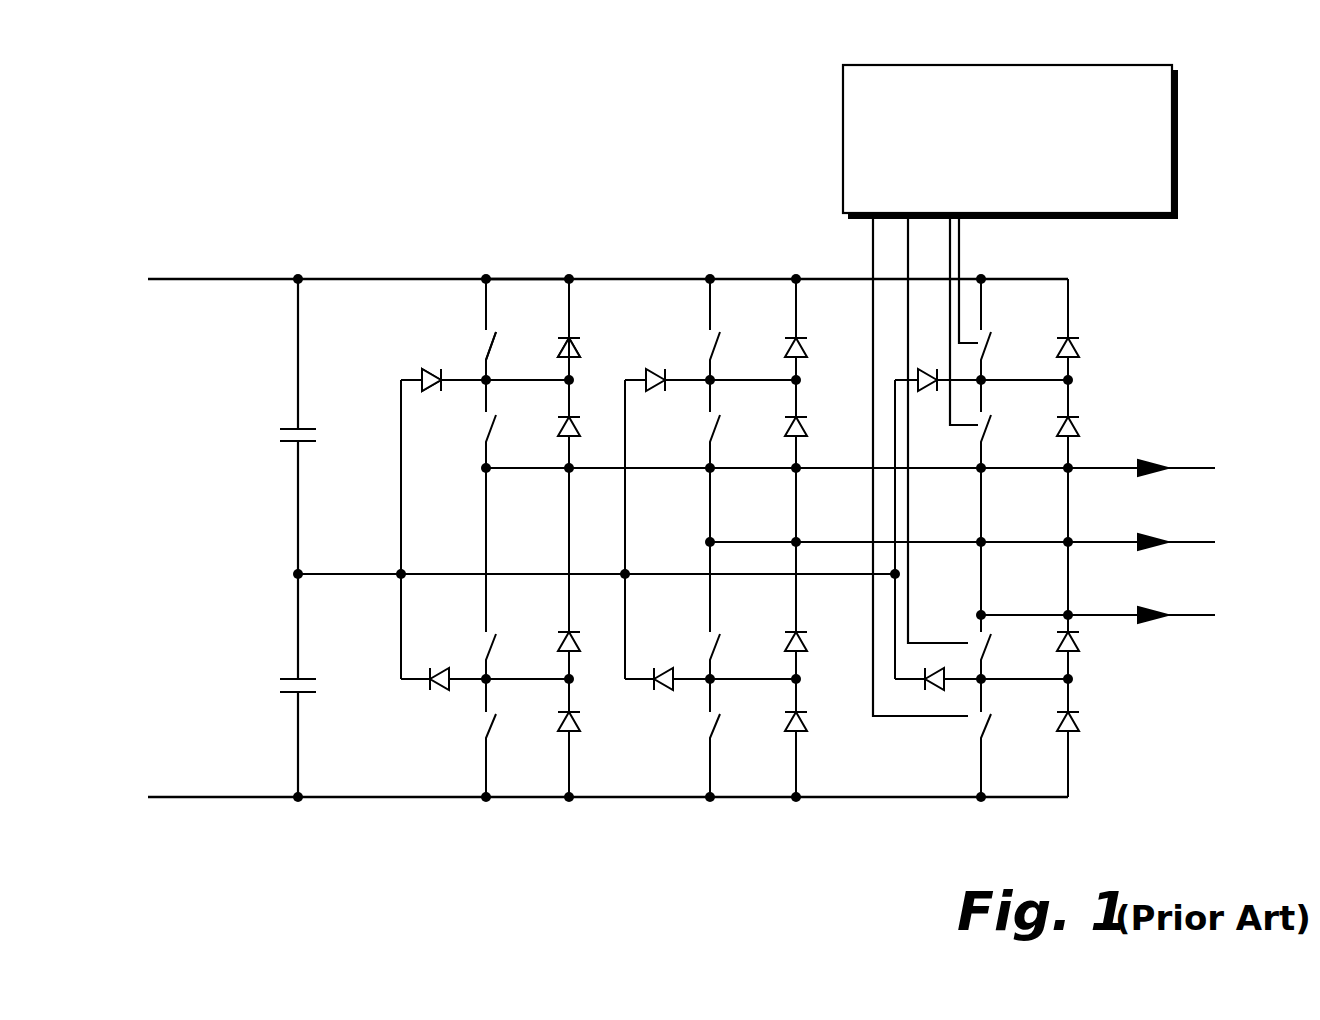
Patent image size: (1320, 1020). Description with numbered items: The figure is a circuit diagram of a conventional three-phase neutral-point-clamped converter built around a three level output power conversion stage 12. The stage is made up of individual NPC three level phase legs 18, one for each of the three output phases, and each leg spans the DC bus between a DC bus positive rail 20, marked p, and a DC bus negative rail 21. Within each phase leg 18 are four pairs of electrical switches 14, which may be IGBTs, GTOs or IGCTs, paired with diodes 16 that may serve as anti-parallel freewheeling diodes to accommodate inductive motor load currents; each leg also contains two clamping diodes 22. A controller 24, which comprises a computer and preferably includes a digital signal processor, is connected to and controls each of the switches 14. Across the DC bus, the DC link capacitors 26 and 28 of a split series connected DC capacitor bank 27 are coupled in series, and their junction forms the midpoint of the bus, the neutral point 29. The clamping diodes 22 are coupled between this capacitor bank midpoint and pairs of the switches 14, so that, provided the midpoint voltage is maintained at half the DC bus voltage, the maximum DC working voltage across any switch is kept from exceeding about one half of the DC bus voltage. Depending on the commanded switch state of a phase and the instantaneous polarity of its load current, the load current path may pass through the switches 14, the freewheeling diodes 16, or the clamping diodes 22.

The three level output power conversion stage 12 is at (1085, 820).
The electrical switches 14 is at (485, 348).
The diodes 16 is at (556, 340).
The NPC three level phase legs 18 is at (580, 202).
The DC bus positive rail 20 is at (297, 279).
The DC bus negative rail 21 is at (297, 797).
The clamping diodes 22 is at (432, 377).
The controller 24 is at (1010, 390).
The DC link capacitor 26 is at (287, 679).
The split series connected DC capacitor bank 27 is at (333, 228).
The DC link capacitor 28 is at (287, 429).
The neutral point 29 is at (297, 574).